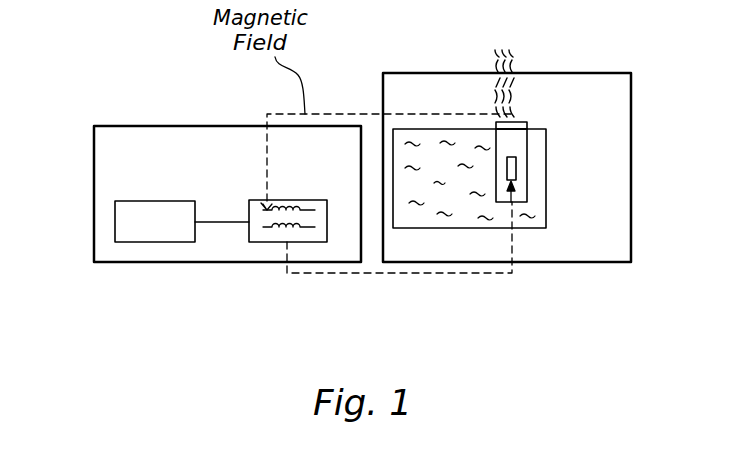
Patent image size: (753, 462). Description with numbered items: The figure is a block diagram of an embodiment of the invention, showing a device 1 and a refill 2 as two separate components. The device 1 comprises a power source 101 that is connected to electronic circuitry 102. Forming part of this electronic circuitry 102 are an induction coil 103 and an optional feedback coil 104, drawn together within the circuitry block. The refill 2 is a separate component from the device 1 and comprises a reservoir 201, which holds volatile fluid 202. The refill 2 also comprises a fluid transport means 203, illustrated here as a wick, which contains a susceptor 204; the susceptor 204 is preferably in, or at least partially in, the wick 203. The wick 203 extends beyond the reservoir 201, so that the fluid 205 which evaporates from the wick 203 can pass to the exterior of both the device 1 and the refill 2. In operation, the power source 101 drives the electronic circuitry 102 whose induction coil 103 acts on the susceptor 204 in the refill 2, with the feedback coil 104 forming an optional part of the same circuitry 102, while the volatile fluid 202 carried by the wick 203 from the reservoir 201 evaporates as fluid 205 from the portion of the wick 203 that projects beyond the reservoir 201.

The device 1 is at (94, 190).
The power source 101 is at (155, 242).
The electronic circuitry 102 is at (320, 242).
The induction coil 103 is at (268, 227).
The feedback coil 104 is at (290, 210).
The refill 2 is at (631, 155).
The reservoir 201 is at (447, 129).
The volatile fluid 202 is at (405, 129).
The fluid transport means 203 is at (527, 190).
The susceptor 204 is at (516, 167).
The fluid 205 is at (513, 50).